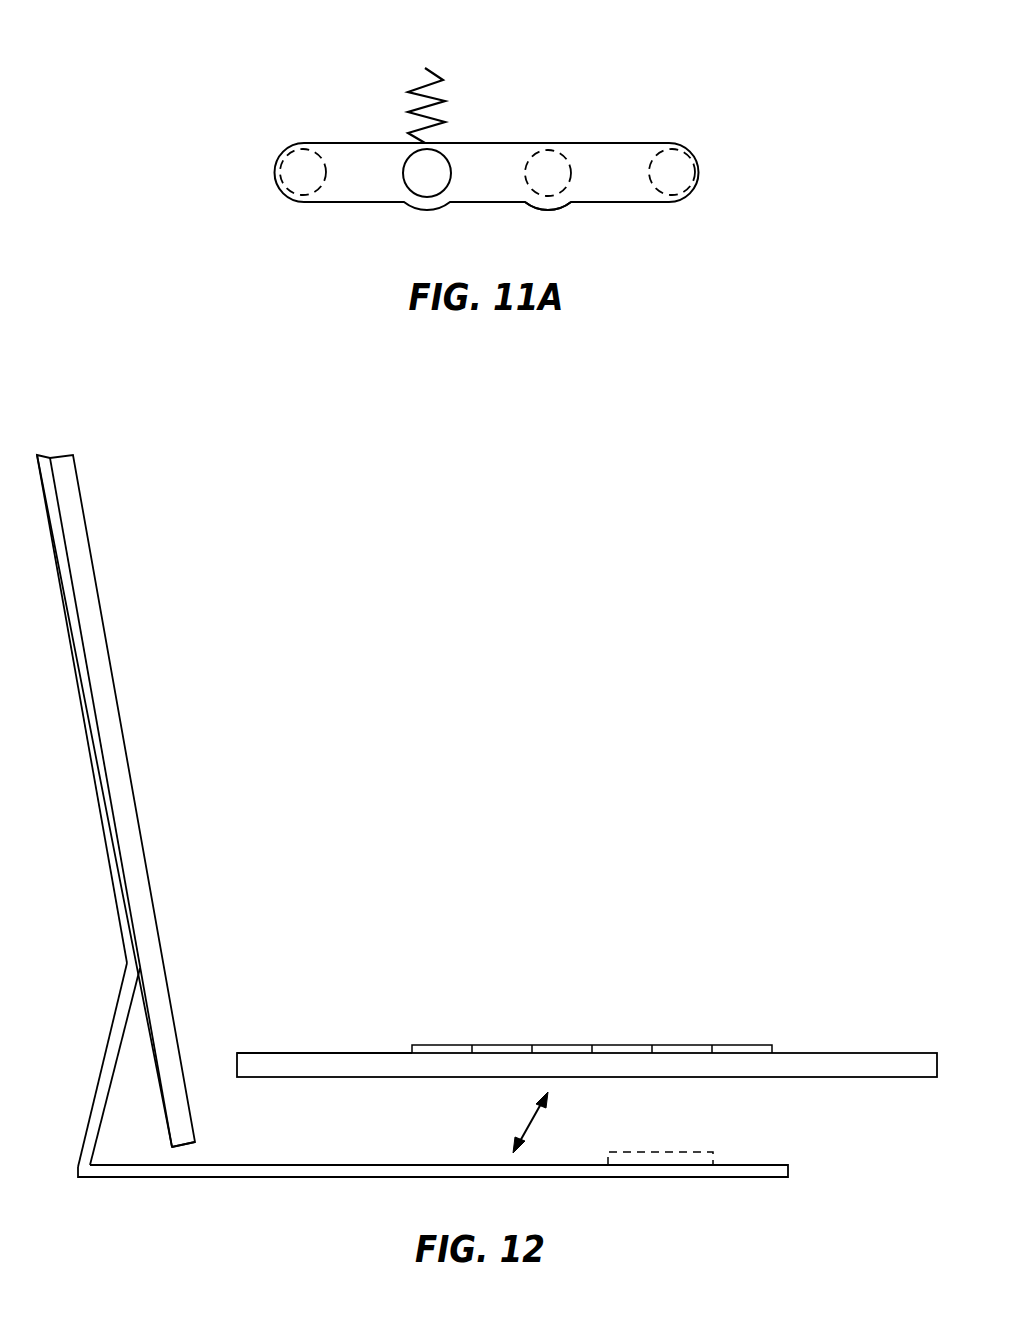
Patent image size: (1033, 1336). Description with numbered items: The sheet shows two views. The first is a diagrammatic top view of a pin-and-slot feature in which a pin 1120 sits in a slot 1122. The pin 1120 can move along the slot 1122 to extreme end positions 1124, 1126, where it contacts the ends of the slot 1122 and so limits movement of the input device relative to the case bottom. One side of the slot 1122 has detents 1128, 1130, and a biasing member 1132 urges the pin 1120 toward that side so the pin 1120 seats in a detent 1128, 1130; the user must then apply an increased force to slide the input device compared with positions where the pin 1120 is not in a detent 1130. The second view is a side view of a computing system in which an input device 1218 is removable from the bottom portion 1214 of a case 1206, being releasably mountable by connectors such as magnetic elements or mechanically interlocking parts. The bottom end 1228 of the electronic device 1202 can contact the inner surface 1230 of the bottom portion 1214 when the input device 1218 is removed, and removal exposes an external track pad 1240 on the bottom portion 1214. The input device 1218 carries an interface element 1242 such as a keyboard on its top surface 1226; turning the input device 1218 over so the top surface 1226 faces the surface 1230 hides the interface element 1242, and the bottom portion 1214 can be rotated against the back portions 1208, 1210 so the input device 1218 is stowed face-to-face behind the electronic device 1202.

In FIG. 11A, the pin 1120 is at (423, 180).
In FIG. 11A, the slot 1122 is at (612, 159).
In FIG. 11A, the extreme end position 1124 is at (331, 177).
In FIG. 11A, the extreme end position 1126 is at (693, 163).
In FIG. 11A, the detent 1128 is at (435, 208).
In FIG. 11A, the detent 1130 is at (558, 208).
In FIG. 11A, the biasing member 1132 is at (430, 70).
In FIG. 12, the electronic device 1202 is at (134, 798).
In FIG. 12, the case 1206 is at (237, 1178).
In FIG. 12, the back portion 1208 is at (104, 768).
In FIG. 12, the back portion 1210 is at (102, 1067).
In FIG. 12, the bottom portion 1214 is at (601, 1177).
In FIG. 12, the input device 1218 is at (865, 1053).
In FIG. 12, the top surface 1226 is at (310, 1053).
In FIG. 12, the bottom end 1228 is at (184, 1148).
In FIG. 12, the inner surface 1230 is at (763, 1165).
In FIG. 12, the external track pad 1240 is at (688, 1152).
In FIG. 12, the interface element 1242 is at (573, 1045).